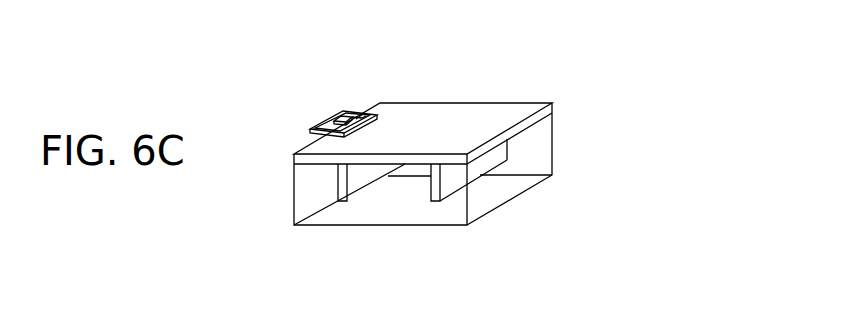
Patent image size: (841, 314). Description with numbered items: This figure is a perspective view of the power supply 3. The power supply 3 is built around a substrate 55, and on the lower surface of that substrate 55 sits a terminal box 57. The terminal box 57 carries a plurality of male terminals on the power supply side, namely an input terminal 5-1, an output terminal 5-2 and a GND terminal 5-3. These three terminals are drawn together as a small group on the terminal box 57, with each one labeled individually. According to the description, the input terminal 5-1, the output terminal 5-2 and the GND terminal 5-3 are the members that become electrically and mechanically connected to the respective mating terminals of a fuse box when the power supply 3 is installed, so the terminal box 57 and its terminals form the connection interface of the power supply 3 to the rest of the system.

The power supply 3 is at (398, 221).
The substrate 55 is at (443, 110).
The terminal box 57 is at (309, 133).
The input terminal 5-1 is at (325, 118).
The output terminal 5-2 is at (356, 115).
The GND terminal 5-3 is at (342, 117).